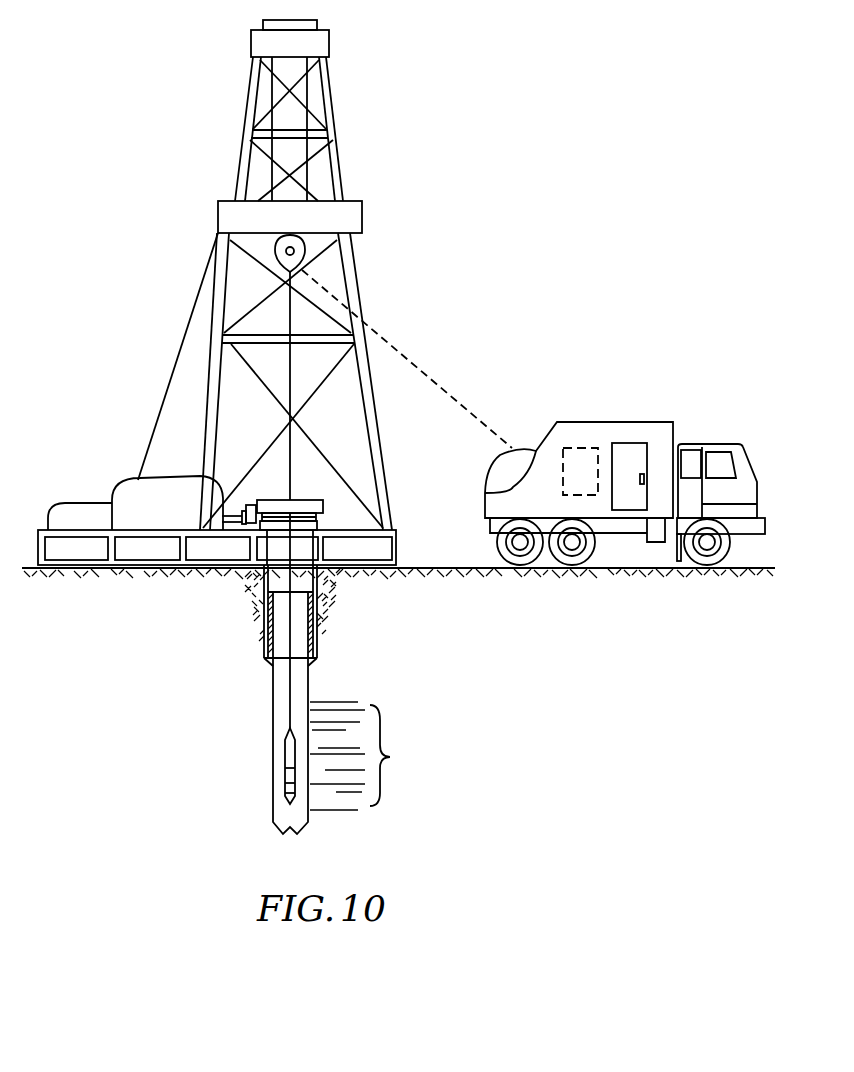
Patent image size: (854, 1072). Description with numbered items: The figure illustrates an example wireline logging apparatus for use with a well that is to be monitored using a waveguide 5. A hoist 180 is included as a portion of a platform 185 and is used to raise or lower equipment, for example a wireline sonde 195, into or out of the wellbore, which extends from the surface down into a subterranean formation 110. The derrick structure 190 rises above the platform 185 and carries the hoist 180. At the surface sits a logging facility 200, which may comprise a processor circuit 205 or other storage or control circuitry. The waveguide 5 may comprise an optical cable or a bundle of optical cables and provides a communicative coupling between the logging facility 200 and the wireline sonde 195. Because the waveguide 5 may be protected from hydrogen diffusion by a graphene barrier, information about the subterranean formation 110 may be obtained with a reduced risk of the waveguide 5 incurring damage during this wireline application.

The waveguide 5 is at (402, 352).
The subterranean formation 110 is at (390, 757).
The hoist 180 is at (306, 250).
The platform 185 is at (403, 540).
The derrick 190 is at (378, 432).
The wireline sonde 195 is at (285, 752).
The logging facility 200 is at (638, 443).
The processor circuit 205 is at (573, 446).